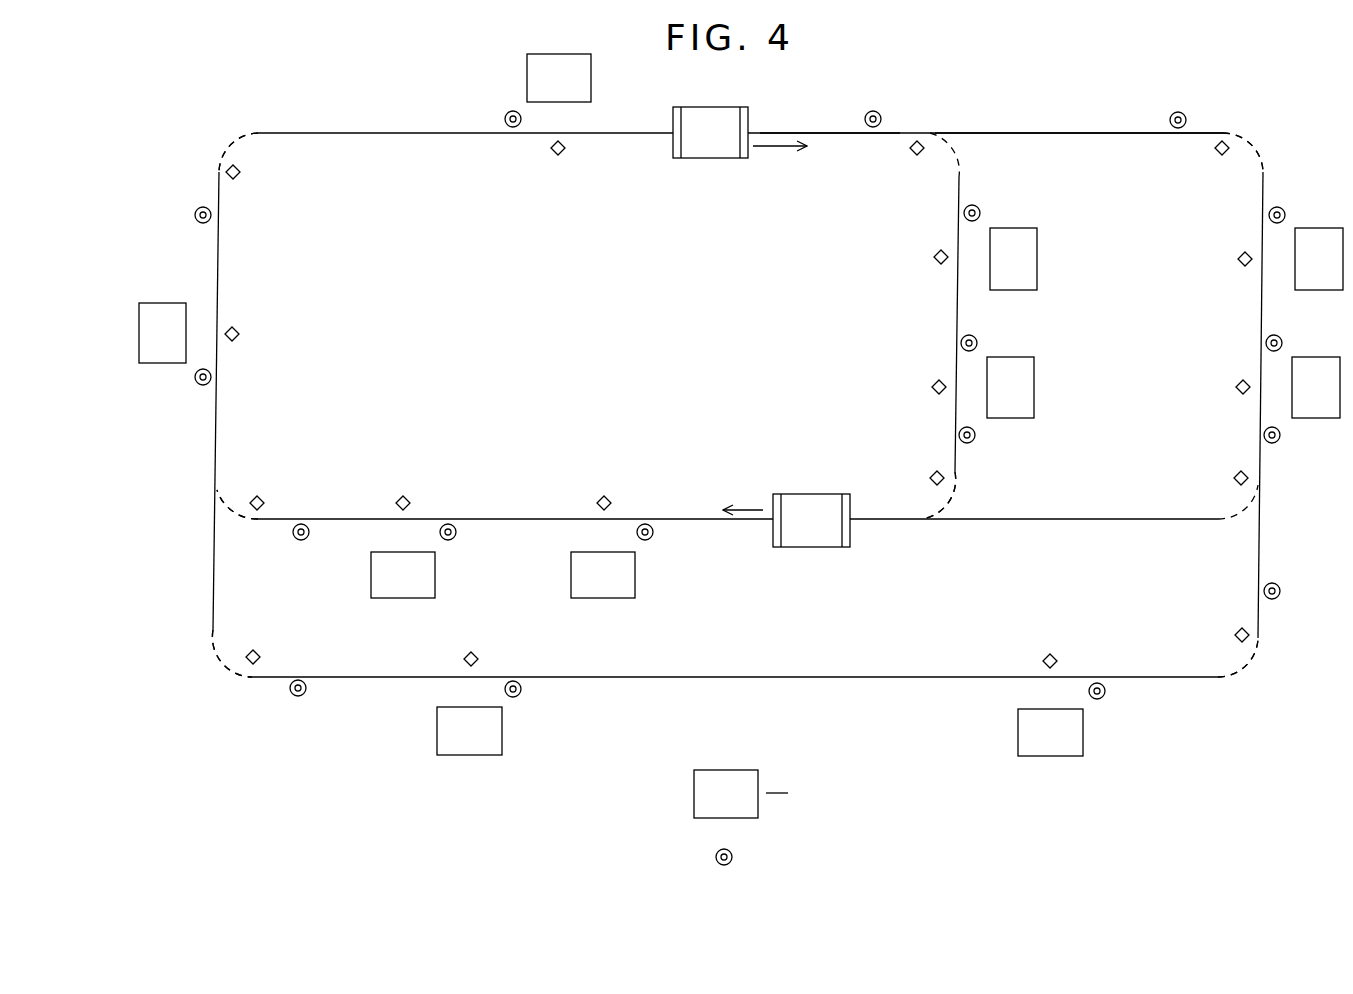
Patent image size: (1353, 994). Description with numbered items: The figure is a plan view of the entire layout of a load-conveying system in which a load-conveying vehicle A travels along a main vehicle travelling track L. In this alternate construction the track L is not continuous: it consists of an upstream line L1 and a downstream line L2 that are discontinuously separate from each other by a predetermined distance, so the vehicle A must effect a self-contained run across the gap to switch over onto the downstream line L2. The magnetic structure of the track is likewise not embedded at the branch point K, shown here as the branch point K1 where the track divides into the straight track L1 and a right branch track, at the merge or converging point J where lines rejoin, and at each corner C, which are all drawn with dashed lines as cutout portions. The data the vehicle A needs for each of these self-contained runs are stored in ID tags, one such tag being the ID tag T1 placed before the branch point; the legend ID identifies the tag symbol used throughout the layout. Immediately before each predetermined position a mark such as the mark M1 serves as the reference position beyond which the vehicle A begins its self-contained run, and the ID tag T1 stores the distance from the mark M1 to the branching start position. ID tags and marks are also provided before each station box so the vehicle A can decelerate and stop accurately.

The main vehicle travelling track L is at (406, 136).
The upstream line L1 is at (819, 130).
The downstream line L2 is at (957, 205).
The branch point K is at (1241, 534).
The branch point K1 is at (980, 150).
The corner C is at (221, 136).
The merge point J is at (233, 544).
The load-conveying vehicle A is at (703, 158).
The ID tag T1 is at (882, 116).
The mark M1 is at (912, 154).
The ID tag ID is at (743, 857).